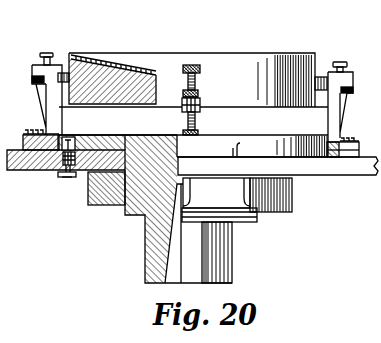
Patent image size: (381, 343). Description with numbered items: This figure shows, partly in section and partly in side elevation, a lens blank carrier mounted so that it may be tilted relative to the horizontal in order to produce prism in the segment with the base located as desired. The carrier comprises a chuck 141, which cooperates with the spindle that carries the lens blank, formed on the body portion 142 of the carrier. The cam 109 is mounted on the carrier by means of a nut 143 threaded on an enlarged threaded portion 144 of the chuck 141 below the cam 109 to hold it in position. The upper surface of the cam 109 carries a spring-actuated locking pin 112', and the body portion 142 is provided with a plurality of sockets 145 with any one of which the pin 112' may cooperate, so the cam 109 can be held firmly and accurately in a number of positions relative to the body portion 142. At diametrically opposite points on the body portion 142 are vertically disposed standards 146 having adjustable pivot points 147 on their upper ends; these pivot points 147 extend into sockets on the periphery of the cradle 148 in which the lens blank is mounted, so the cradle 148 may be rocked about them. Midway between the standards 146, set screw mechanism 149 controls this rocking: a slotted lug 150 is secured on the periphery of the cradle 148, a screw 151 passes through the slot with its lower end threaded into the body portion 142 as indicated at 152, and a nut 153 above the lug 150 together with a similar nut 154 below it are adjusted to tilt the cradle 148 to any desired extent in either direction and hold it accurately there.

The cam 109 is at (331, 167).
The spring-actuated locking pin 112' is at (59, 172).
The chuck 141 is at (212, 249).
The body portion 142 is at (132, 138).
The nut 143 is at (100, 206).
The enlarged threaded portion 144 is at (137, 216).
The sockets 145 is at (240, 143).
The standards 146 is at (50, 110).
The adjustable pivot points 147 is at (63, 71).
The cradle 148 is at (123, 63).
The set screw mechanism 149 is at (199, 79).
The lug 150 is at (183, 95).
The screw 151 is at (193, 65).
The threaded lower end of screw 152 is at (186, 129).
The nut 153 is at (200, 93).
The nut 154 is at (200, 108).